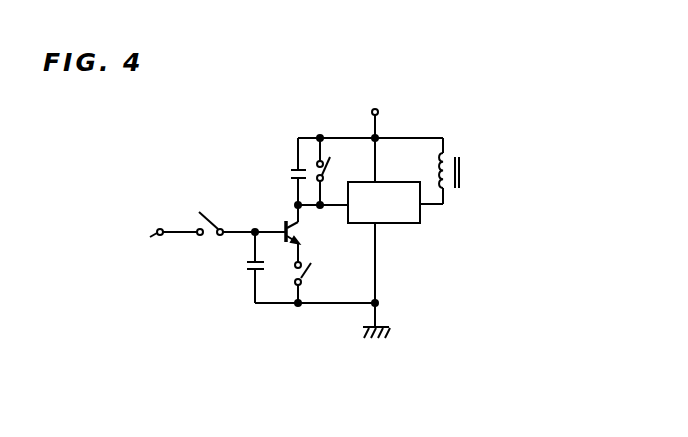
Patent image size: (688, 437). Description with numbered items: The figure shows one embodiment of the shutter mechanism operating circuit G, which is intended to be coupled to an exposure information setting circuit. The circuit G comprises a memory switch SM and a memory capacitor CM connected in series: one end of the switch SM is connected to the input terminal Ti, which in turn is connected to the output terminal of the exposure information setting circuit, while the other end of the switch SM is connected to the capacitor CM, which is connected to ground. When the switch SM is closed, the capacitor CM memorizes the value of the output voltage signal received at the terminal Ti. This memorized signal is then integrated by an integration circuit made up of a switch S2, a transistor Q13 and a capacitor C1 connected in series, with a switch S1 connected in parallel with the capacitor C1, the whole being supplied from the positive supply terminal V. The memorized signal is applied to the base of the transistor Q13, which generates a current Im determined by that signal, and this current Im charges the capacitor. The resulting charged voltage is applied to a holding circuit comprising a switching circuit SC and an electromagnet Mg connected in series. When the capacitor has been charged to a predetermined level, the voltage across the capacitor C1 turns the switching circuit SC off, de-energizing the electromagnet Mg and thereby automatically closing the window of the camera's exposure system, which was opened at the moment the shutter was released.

The positive supply voltage terminal V is at (370, 140).
The capacitor C1 is at (290, 170).
The switch S1 is at (336, 171).
The switch S2 is at (311, 270).
The memory switch SM is at (210, 220).
The memory capacitor CM is at (235, 266).
The input terminal Ti is at (140, 231).
The transistor Q13 is at (301, 233).
The switching circuit SC is at (384, 202).
The electromagnet Mg is at (470, 170).
The shutter mechanism operating circuit G is at (433, 124).
The current Im is at (287, 196).